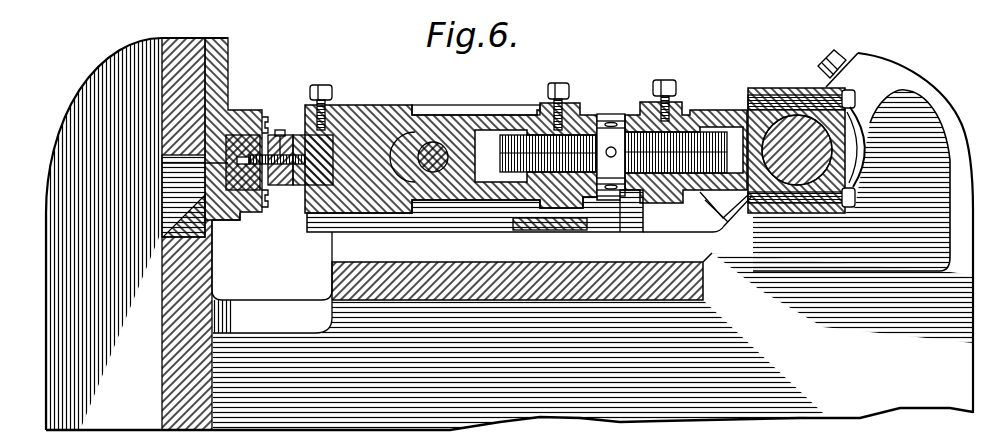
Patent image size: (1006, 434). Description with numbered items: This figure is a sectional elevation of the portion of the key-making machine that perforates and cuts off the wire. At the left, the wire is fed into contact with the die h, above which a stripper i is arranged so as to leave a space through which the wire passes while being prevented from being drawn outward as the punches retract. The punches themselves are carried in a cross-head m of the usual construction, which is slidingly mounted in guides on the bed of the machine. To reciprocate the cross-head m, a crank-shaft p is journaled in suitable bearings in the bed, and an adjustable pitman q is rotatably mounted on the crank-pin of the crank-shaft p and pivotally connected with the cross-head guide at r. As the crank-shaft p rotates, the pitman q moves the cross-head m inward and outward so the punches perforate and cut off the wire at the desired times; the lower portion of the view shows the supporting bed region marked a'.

The stripper i is at (263, 143).
The cross-head m is at (367, 110).
The pivotal connection r is at (437, 143).
The adjustable pitman q is at (648, 113).
The crank-shaft p is at (780, 127).
The die h is at (240, 214).
The base a' is at (509, 341).